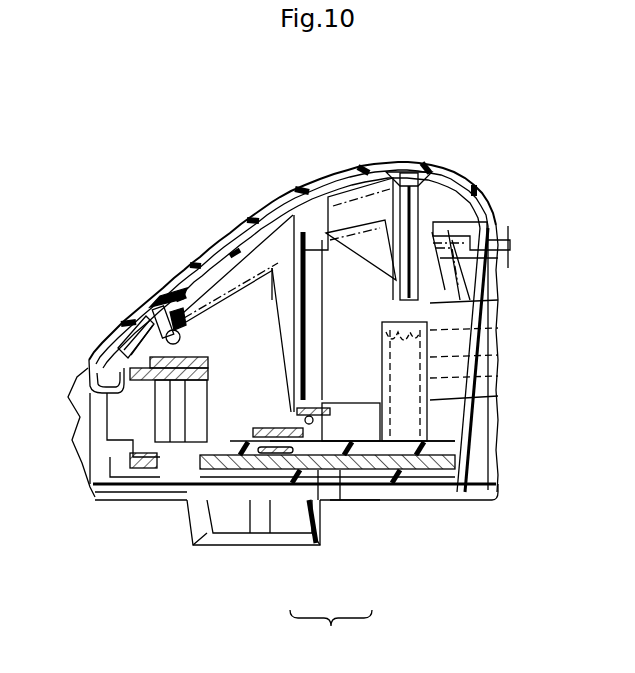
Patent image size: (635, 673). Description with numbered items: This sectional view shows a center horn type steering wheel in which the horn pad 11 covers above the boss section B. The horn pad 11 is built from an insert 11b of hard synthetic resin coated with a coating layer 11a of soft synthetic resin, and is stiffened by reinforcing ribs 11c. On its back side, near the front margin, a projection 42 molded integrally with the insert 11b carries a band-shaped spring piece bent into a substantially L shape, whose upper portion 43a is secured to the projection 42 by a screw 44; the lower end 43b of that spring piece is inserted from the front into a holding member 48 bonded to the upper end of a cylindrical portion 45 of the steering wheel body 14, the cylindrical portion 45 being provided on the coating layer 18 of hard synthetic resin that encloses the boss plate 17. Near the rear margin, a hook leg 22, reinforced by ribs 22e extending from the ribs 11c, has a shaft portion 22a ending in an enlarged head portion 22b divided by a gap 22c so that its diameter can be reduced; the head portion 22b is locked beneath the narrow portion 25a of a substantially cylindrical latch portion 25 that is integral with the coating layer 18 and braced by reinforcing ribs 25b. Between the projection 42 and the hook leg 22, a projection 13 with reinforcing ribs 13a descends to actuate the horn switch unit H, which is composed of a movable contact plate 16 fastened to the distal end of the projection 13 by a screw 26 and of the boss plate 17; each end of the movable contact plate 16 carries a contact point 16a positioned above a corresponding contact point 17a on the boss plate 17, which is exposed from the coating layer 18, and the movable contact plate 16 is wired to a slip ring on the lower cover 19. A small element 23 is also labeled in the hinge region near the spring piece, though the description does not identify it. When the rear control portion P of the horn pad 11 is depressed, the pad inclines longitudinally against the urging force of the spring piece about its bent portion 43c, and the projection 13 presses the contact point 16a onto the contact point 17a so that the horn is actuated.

The horn pad 11 is at (418, 96).
The coating layer 11a is at (408, 172).
The insert 11b is at (328, 195).
The reinforcing ribs 11c is at (243, 235).
The projections 13 is at (290, 415).
The reinforcing ribs 13a is at (268, 262).
The steering wheel body 14 is at (448, 512).
The movable contact plate 16 is at (340, 470).
The contact point 16a is at (235, 500).
The boss plate 17 is at (318, 470).
The contact points 17a is at (283, 470).
The coating layer 18 is at (460, 460).
The lower cover 19 is at (138, 500).
The hook legs 22 is at (386, 297).
The shaft portion 22a is at (422, 307).
The head portion 22b is at (430, 357).
The gap 22c is at (430, 378).
The reinforcing ribs 22e is at (458, 212).
The hinge pin 23 is at (188, 336).
The latch portions 25 is at (430, 422).
The narrow portion 25a is at (392, 330).
The reinforcing ribs 25b is at (440, 395).
The screws 26 is at (355, 470).
The projections 42 is at (172, 300).
The upper portion 43a is at (148, 318).
The lower end 43b is at (178, 487).
The bent portion 43c is at (115, 358).
The screw 44 is at (192, 346).
The cylindrical portions 45 is at (122, 440).
The holding member 48 is at (207, 375).
The boss section B is at (390, 512).
The horn switch unit H is at (331, 631).
The rear control portion P is at (438, 154).